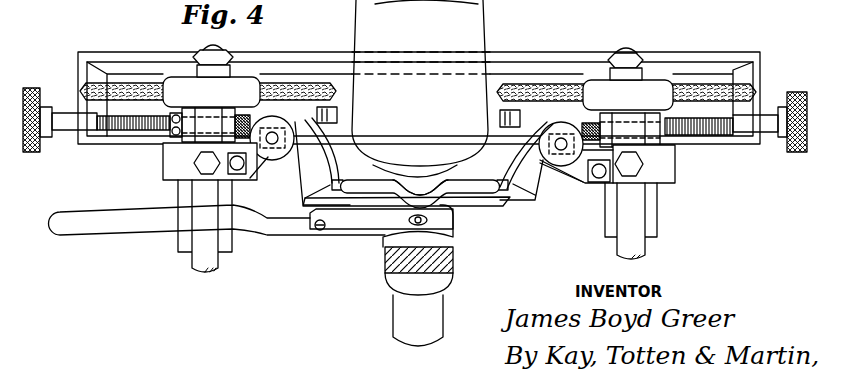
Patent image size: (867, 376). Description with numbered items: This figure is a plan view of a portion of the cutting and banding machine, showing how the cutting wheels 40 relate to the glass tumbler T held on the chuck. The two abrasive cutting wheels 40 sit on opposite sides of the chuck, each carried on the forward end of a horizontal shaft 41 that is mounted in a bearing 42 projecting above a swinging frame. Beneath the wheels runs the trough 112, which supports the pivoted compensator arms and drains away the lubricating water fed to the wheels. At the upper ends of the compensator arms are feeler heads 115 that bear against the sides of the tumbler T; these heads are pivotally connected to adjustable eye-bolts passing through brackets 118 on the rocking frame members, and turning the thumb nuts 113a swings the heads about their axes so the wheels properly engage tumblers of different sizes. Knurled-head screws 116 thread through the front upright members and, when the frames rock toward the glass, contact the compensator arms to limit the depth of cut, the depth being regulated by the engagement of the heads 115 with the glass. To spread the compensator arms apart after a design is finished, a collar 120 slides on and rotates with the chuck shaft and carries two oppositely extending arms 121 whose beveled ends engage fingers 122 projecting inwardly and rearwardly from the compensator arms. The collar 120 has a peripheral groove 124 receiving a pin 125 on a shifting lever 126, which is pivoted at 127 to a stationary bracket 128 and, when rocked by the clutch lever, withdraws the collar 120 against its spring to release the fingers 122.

The tumbler T is at (479, 25).
The cutting wheel 40 is at (140, 78).
The horizontal shaft 41 is at (195, 193).
The bearing 42 is at (163, 163).
The trough 112 is at (545, 57).
The thumb nut 113a is at (563, 163).
The feeler head 115 is at (335, 117).
The screw 116 is at (60, 127).
The bracket 118 is at (600, 182).
The collar 120 is at (418, 187).
The arm 121 is at (365, 185).
The finger 122 is at (323, 185).
The peripheral groove 124 is at (453, 207).
The pin 125 is at (453, 233).
The shifting lever 126 is at (365, 222).
The pivot 127 is at (323, 230).
The stationary bracket 128 is at (310, 218).